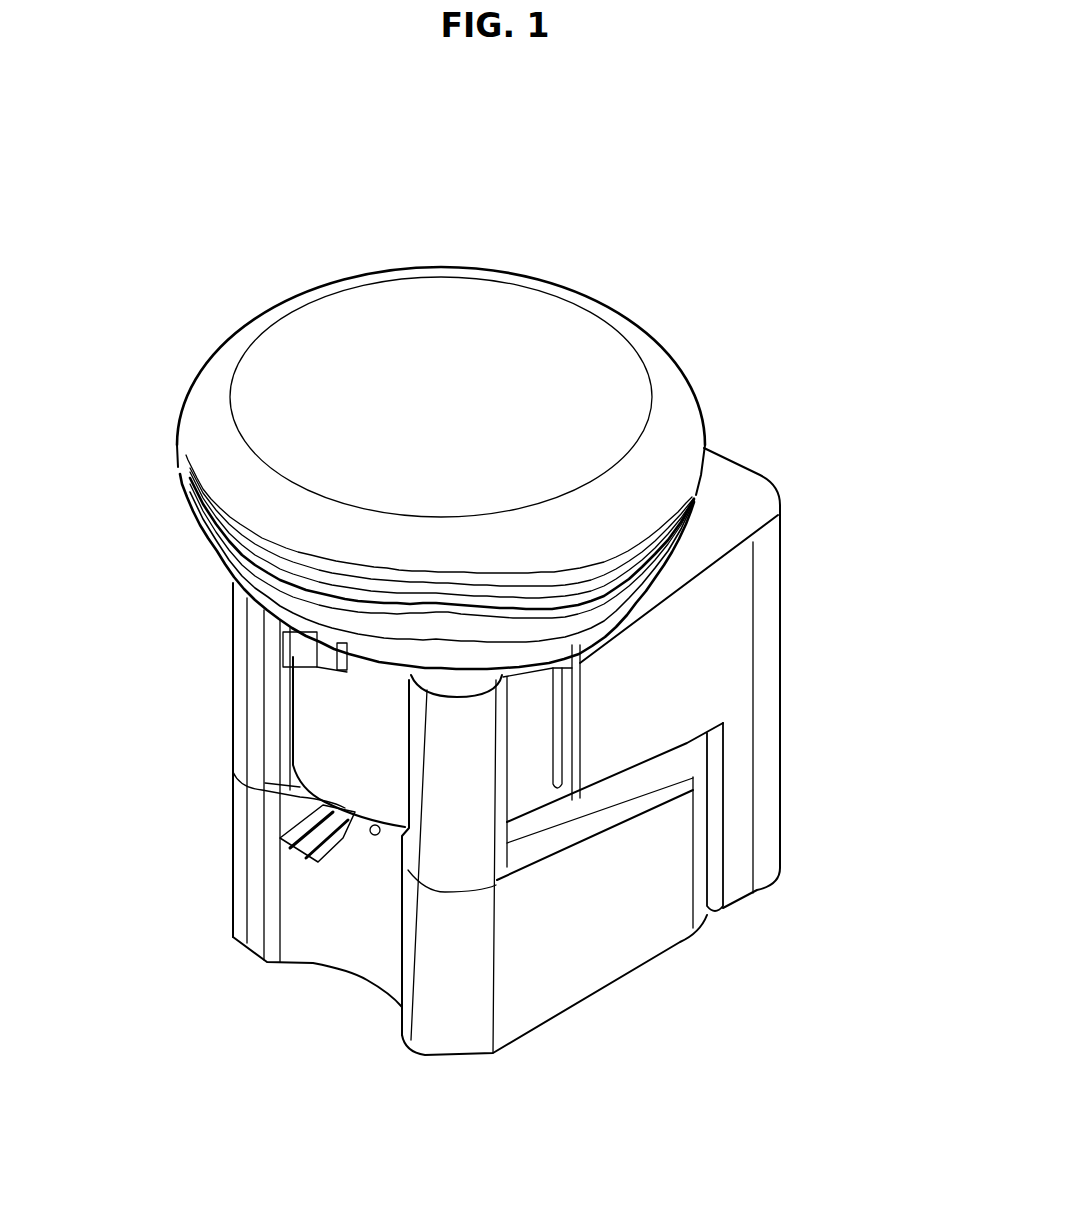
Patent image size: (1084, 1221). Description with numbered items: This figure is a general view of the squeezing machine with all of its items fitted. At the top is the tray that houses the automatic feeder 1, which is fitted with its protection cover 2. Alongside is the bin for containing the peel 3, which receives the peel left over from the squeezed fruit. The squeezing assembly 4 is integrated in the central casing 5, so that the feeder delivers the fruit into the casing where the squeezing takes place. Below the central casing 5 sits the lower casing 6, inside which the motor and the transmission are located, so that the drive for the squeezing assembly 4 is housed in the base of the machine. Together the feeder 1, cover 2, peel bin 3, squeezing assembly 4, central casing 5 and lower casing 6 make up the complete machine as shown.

The automatic feeder 1 is at (217, 563).
The protection cover 2 is at (620, 340).
The bin for containing the peel 3 is at (753, 498).
The squeezing assembly 4 is at (350, 740).
The central casing 5 is at (258, 672).
The lower casing 6 is at (583, 920).